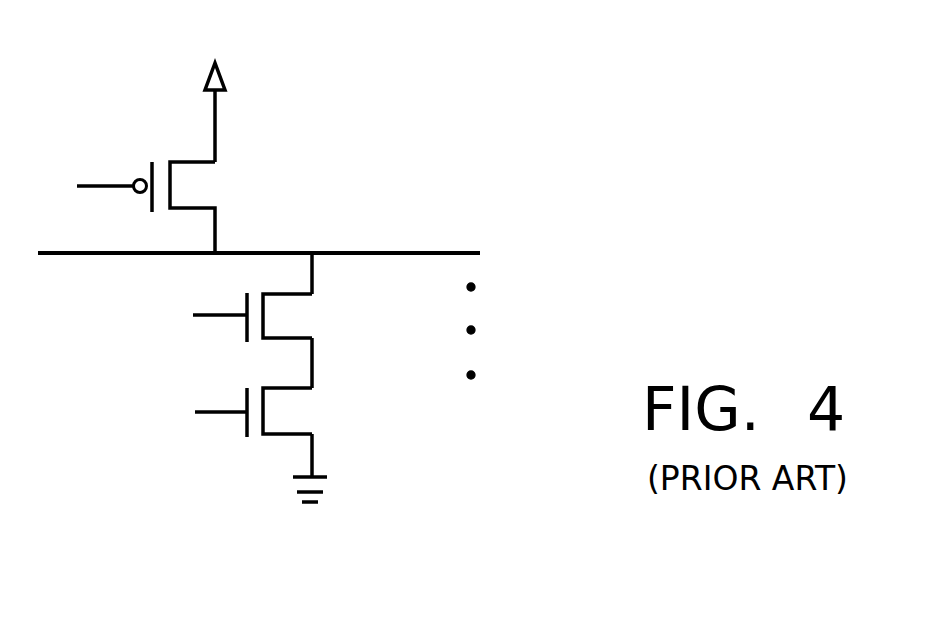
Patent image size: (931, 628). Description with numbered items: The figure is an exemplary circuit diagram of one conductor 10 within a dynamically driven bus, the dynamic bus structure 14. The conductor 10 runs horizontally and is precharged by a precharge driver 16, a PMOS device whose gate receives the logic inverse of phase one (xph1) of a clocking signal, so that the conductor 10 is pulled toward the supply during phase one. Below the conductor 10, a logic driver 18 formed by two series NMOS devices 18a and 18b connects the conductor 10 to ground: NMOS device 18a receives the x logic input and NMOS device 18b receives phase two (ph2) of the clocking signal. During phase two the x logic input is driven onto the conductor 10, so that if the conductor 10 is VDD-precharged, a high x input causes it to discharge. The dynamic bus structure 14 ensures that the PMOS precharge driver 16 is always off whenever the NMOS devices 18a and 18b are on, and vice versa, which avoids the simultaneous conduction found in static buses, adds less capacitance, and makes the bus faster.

The conductor 10 is at (357, 252).
The dynamic bus structure 14 is at (470, 107).
The precharge driver 16 is at (198, 185).
The logic driver 18 is at (285, 377).
The NMOS device 18a is at (300, 325).
The NMOS device 18b is at (295, 410).